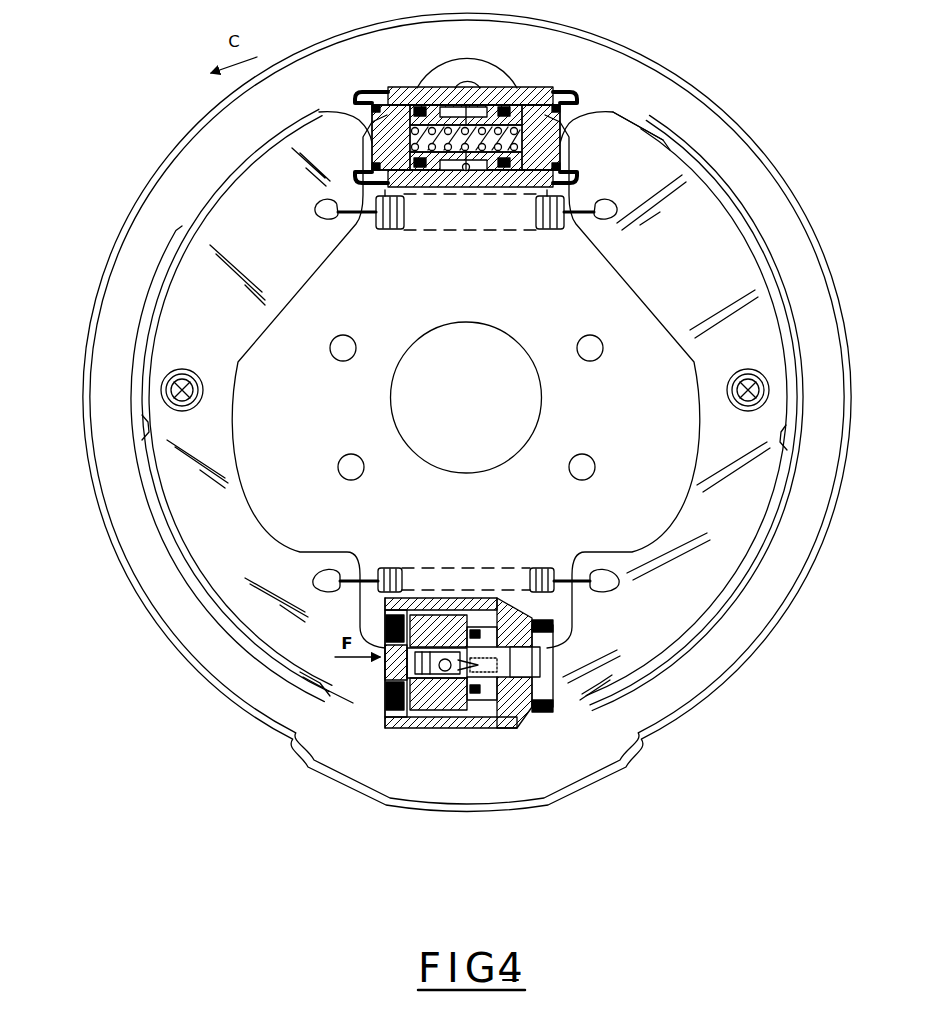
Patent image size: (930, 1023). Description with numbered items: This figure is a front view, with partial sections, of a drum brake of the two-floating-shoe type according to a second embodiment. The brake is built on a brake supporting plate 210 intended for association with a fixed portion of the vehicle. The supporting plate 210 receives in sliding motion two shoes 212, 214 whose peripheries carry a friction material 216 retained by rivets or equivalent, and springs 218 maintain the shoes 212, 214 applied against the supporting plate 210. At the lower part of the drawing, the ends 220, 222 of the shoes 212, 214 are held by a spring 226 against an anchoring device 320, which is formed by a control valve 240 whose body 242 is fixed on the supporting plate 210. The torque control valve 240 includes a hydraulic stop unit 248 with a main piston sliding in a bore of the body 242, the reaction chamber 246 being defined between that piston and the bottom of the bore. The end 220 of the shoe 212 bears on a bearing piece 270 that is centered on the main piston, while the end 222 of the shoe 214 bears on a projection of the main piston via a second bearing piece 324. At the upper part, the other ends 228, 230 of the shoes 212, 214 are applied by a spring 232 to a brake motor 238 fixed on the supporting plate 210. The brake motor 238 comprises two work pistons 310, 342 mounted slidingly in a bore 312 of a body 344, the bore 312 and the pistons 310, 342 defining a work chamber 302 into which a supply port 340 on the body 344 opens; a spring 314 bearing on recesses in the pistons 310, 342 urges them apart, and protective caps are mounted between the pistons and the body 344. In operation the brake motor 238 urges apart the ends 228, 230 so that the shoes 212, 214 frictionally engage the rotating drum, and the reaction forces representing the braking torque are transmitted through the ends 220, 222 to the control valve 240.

The brake supporting plate 210 is at (733, 113).
The shoe 212 is at (232, 198).
The shoe 214 is at (713, 253).
The friction material 216 is at (163, 265).
The springs 218 is at (198, 407).
The end of shoe 212 220 is at (353, 667).
The end of shoe 214 222 is at (587, 673).
The spring 226 is at (548, 565).
The end of shoe 212 228 is at (313, 152).
The end of shoe 214 230 is at (592, 130).
The spring 232 is at (367, 227).
The brake motor 238 is at (458, 56).
The control valve 240 is at (484, 655).
The body 242 is at (520, 733).
The reaction chamber 246 is at (487, 597).
The hydraulic stop unit 248 is at (509, 597).
The bearing piece 270 is at (380, 693).
The work chamber 302 is at (486, 100).
The work piston 310 is at (482, 144).
The bore 312 is at (534, 88).
The spring 314 is at (640, 123).
The anchoring device 320 is at (434, 742).
The second bearing piece 324 is at (568, 700).
The supply port 340 is at (455, 190).
The work piston 342 is at (560, 93).
The body 344 is at (487, 190).